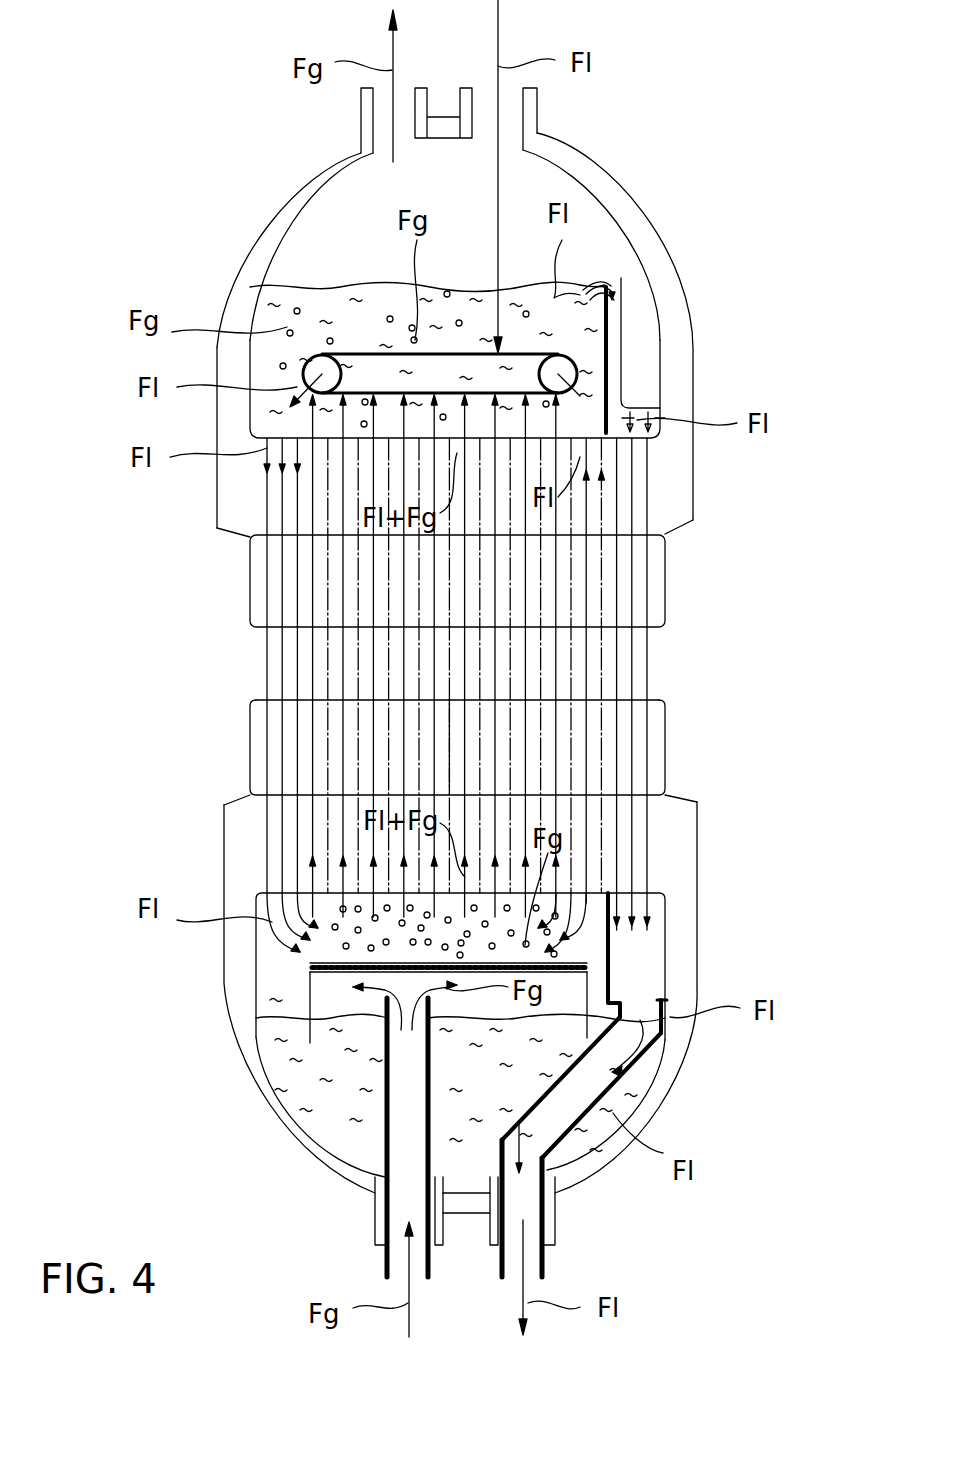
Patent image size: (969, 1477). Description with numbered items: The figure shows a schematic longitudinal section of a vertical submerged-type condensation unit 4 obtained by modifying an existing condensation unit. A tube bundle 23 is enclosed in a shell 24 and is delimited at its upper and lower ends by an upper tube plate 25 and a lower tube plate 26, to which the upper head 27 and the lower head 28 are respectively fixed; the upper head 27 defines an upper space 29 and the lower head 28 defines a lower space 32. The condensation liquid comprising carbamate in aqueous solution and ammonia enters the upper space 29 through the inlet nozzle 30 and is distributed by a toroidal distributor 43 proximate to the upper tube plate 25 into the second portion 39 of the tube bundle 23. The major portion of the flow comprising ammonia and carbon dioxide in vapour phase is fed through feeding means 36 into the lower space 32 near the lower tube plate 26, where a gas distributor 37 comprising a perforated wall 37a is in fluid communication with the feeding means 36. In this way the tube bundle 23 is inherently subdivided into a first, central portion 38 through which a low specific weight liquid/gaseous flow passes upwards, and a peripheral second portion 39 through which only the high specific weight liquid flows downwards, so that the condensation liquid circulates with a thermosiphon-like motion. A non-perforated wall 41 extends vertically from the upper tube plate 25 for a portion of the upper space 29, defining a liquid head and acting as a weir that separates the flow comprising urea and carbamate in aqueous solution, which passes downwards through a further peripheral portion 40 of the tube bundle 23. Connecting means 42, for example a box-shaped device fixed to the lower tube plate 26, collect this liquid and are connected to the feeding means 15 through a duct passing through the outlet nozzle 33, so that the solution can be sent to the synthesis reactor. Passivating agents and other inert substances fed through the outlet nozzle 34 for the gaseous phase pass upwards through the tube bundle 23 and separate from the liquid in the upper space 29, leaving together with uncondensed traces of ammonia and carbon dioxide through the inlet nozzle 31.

The condensation unit 4 is at (205, 155).
The feeding means 15 is at (547, 1257).
The tube bundle 23 is at (625, 713).
The shell 24 is at (667, 757).
The upper tube plate 25 is at (678, 527).
The lower tube plate 26 is at (673, 850).
The upper head 27 is at (677, 315).
The lower head 28 is at (668, 1050).
The upper space 29 is at (300, 240).
The inlet nozzle 30 is at (532, 107).
The inlet nozzle 31 is at (367, 108).
The lower space 32 is at (273, 968).
The outlet nozzle 33 is at (550, 1222).
The outlet nozzle 34 is at (382, 1222).
The feeding means 36 is at (383, 1107).
The gas distributor 37 is at (307, 1013).
The perforated wall 37a is at (330, 987).
The first portion 38 is at (477, 730).
The second portion 39 is at (597, 497).
The further peripheral portion 40 is at (623, 657).
The wall 41 is at (608, 308).
The connecting means 42 is at (640, 1063).
The toroidal distributor 43 is at (580, 373).